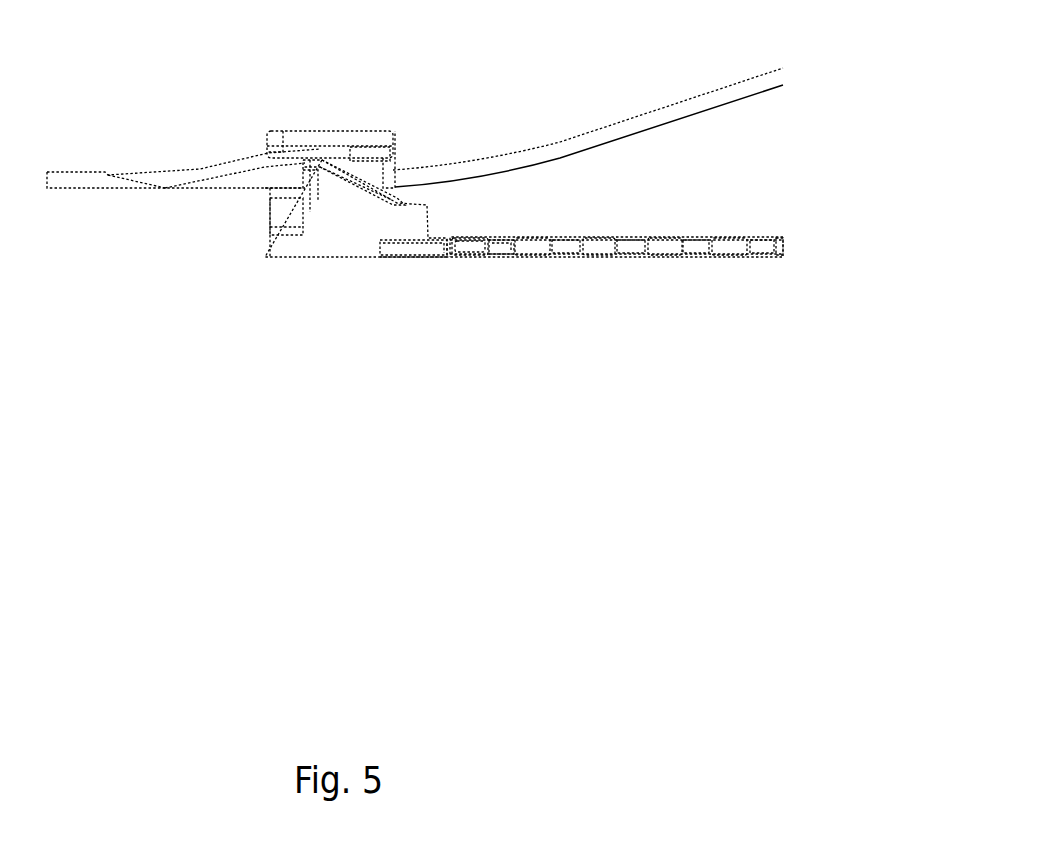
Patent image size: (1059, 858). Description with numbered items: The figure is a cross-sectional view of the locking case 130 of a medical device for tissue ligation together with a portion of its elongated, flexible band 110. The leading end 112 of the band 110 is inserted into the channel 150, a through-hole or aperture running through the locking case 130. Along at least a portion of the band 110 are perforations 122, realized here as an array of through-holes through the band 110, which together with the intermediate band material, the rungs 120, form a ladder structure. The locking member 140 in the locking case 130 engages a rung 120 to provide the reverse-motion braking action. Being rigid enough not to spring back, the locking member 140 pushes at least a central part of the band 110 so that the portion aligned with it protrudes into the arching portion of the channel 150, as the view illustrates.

The band 110 is at (550, 150).
The leading end 112 is at (65, 176).
The rungs 120 is at (600, 245).
The perforations 122 is at (502, 245).
The locking case 130 is at (338, 242).
The locking member 140 is at (313, 175).
The channel 150 is at (290, 176).